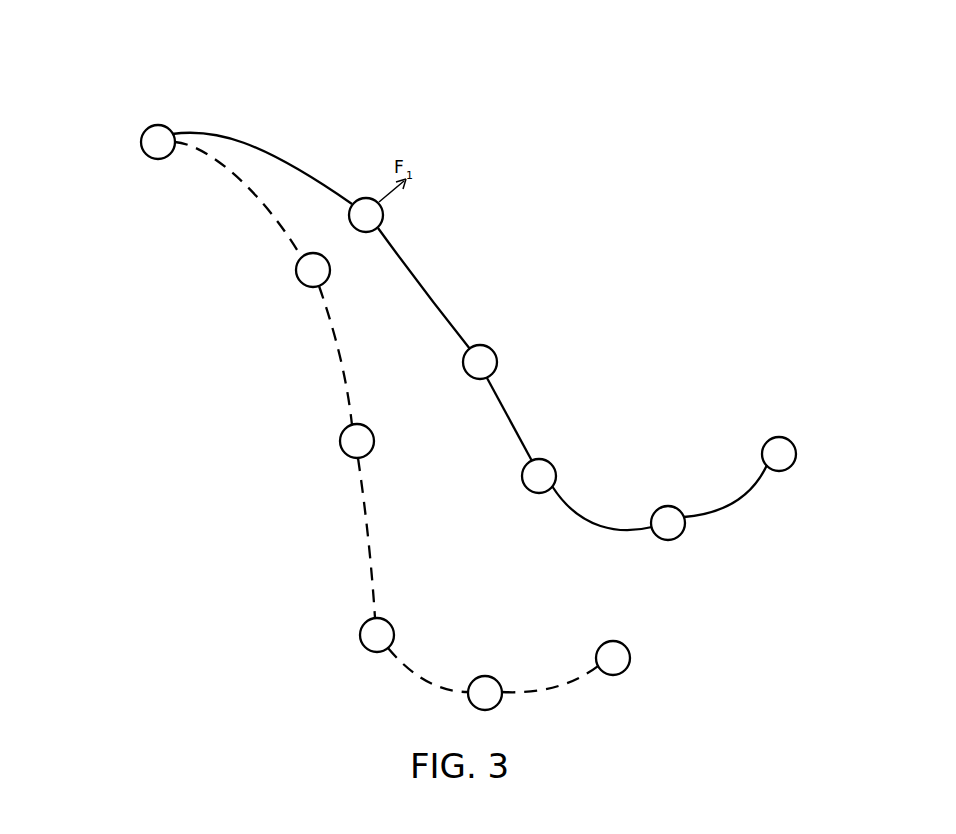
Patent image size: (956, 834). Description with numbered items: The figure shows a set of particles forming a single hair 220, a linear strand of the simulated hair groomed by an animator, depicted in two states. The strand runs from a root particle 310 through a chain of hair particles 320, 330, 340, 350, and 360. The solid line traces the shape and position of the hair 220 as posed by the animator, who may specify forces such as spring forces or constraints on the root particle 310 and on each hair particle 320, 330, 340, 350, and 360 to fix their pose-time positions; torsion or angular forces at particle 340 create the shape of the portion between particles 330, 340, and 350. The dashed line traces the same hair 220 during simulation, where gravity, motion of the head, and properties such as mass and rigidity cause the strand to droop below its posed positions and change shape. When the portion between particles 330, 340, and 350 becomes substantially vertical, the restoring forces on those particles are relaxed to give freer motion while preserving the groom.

The single hair 220 is at (407, 116).
The root particle 310 is at (141, 140).
The hair particle 320 is at (383, 214).
The hair particle 330 is at (497, 362).
The hair particle 340 is at (556, 477).
The hair particle 350 is at (673, 507).
The hair particle 360 is at (788, 440).